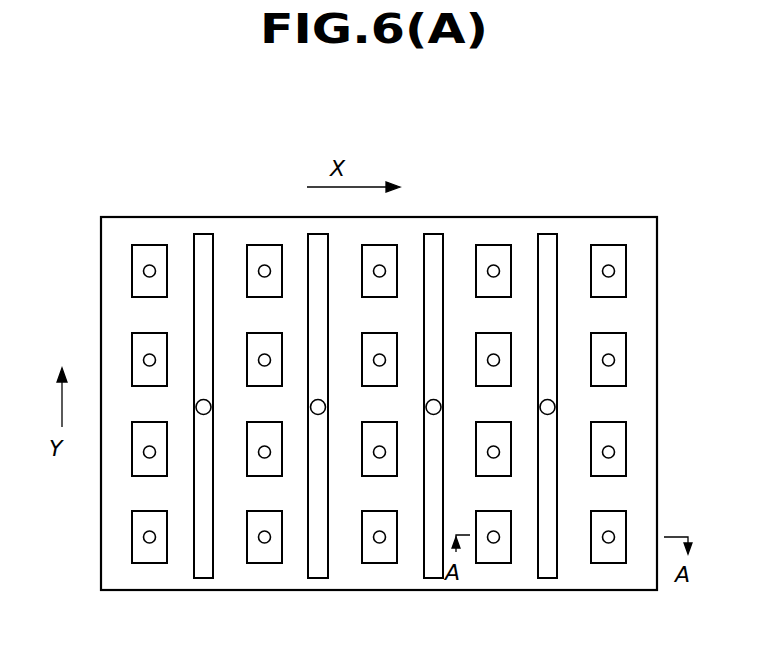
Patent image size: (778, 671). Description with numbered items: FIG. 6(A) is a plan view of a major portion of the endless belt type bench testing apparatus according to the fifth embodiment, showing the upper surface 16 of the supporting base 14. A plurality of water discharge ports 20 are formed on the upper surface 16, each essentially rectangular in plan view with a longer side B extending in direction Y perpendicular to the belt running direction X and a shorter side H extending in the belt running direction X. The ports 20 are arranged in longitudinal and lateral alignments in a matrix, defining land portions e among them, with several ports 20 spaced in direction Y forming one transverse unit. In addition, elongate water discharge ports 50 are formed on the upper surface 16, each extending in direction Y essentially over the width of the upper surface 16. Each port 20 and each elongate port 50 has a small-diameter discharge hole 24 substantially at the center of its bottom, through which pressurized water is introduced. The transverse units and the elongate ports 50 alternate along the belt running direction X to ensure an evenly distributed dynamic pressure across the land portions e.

The upper surface 16 is at (212, 217).
The supporting base 14 is at (499, 216).
The elongate water discharge port 50 is at (548, 253).
The discharge hole 24 is at (555, 407).
The water discharge port 20 is at (605, 564).
The longer side B is at (245, 540).
The shorter side H is at (262, 563).
The land portion e is at (522, 570).